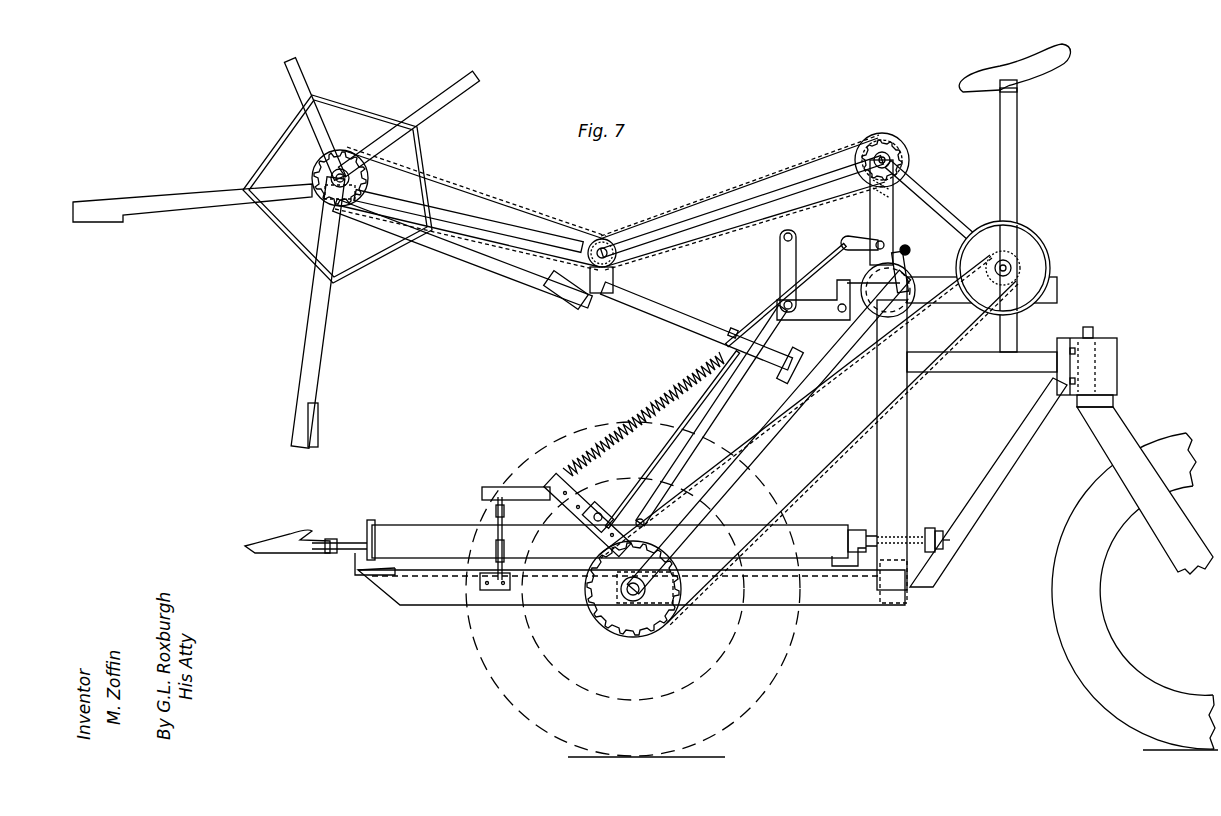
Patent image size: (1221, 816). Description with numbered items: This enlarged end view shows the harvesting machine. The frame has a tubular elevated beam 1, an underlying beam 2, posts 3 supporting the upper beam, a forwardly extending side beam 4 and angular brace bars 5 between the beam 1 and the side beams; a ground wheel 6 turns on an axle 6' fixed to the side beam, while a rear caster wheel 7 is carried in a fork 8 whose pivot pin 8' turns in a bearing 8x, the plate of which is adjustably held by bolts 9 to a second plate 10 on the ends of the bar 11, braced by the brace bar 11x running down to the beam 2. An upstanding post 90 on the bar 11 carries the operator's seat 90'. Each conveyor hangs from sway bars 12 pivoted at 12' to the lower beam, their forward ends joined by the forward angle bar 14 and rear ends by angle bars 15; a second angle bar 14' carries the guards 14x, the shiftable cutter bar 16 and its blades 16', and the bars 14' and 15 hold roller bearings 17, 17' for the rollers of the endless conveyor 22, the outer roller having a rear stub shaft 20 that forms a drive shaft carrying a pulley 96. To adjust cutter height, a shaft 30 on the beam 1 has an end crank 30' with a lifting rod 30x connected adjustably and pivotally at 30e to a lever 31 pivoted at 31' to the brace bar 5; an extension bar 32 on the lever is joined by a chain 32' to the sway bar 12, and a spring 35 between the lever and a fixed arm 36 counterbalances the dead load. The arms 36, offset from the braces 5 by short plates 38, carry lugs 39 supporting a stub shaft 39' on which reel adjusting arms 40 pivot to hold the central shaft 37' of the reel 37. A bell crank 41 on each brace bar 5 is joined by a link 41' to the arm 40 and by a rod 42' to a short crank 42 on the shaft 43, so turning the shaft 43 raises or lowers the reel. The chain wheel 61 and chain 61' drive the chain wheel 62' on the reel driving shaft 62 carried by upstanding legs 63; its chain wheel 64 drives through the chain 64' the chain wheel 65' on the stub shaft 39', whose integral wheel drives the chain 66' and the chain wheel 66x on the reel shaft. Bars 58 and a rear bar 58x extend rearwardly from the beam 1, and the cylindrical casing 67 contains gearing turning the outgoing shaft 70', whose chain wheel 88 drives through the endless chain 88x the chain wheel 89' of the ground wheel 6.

The main elevated beam 1 is at (895, 312).
The underlying beam 2 is at (908, 585).
The posts 3 is at (925, 445).
The side beam 4 is at (775, 600).
The angular brace bars 5 is at (757, 452).
The ground wheels 6 is at (636, 589).
The axles 6' is at (629, 598).
The caster wheel 7 is at (1052, 585).
The fork 8 is at (1140, 490).
The pivot pin 8' is at (1103, 326).
The bearing 8x is at (1117, 370).
The adjusting bolts 9 is at (1055, 378).
The second plate 10 is at (1058, 345).
The bar 11 is at (975, 372).
The brace bar 11x is at (985, 492).
The sway bar 12 is at (631, 601).
The pivotal connection 12' is at (872, 596).
The forward angle bar 14 is at (373, 592).
The second angle bar 14' is at (356, 580).
The guards 14x is at (288, 560).
The angle bars 15 is at (845, 575).
The cutter bar 16 is at (331, 565).
The grain cutter blades 16' is at (323, 524).
The forward roller bearings 17 is at (369, 528).
The rearward roller bearings 17' is at (857, 525).
The stub shaft 20 is at (925, 540).
The endless conveyor 22 is at (430, 522).
The shaft 30 is at (857, 232).
The rod head 30' is at (802, 291).
The lifting rod 30x is at (680, 398).
The adjustable pivotal connection 30e is at (595, 530).
The lever 31 is at (603, 495).
The pivot 31' is at (707, 416).
The forward extension bar 32 is at (513, 473).
The chain 32' is at (472, 543).
The springs 35 is at (640, 410).
The fixed arm 36 is at (700, 318).
The reel 37 is at (276, 253).
The reel shaft 37' is at (312, 174).
The short plates 38 is at (783, 375).
The upstanding lugs 39 is at (626, 279).
The stub shaft 39' is at (607, 235).
The reel adjusting arms 40 is at (540, 228).
The bell crank 41 is at (813, 312).
The link 41' is at (769, 271).
The short crank 42 is at (920, 272).
The rod 42' is at (872, 310).
The shaft 43 is at (908, 246).
The inner bar 58 is at (975, 290).
The rear bar 58x is at (1072, 300).
The chain wheel 61 is at (1004, 258).
The endless chain 61' is at (944, 208).
The reel driving shaft 62 is at (904, 153).
The chain wheel 62' is at (891, 143).
The upstanding legs 63 is at (870, 207).
The chain wheel 64 is at (865, 159).
The endless chain 64' is at (743, 202).
The chain wheel 65' is at (463, 260).
The endless chain 66' is at (470, 208).
The chain wheel 66x is at (345, 160).
The casing 67 is at (1020, 252).
The outgoing shaft 70' is at (1062, 246).
The chain wheels 88 is at (1008, 282).
The endless chains 88x is at (815, 484).
The chain wheels 89' is at (665, 647).
The upstanding post 90 is at (1032, 220).
The seat 90' is at (1026, 73).
The pulley 96 is at (940, 537).